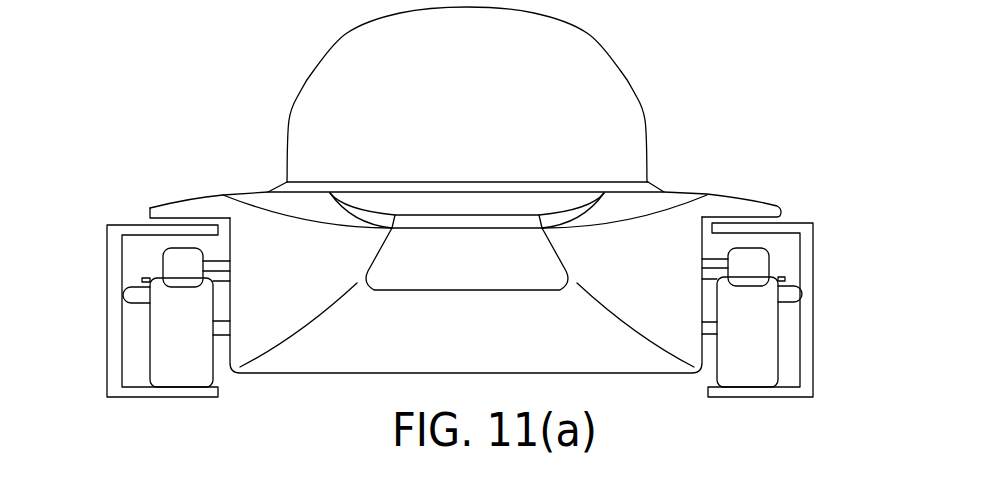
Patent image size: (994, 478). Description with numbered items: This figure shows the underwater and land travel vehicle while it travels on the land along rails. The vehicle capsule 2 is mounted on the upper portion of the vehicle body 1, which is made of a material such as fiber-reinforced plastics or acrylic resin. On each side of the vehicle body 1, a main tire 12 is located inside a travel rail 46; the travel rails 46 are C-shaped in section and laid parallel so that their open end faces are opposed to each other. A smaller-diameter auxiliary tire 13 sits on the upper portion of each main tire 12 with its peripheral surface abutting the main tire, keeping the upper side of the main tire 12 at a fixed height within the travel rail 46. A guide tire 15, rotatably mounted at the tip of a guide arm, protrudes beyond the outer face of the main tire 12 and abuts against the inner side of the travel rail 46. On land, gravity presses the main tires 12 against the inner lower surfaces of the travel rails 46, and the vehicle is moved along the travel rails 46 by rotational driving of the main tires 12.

The vehicle body 1 is at (680, 193).
The vehicle capsule 2 is at (620, 77).
The main tire 12 is at (197, 368).
The auxiliary tire 13 is at (173, 265).
The guide tire 15 is at (132, 297).
The travel rail 46 is at (813, 233).